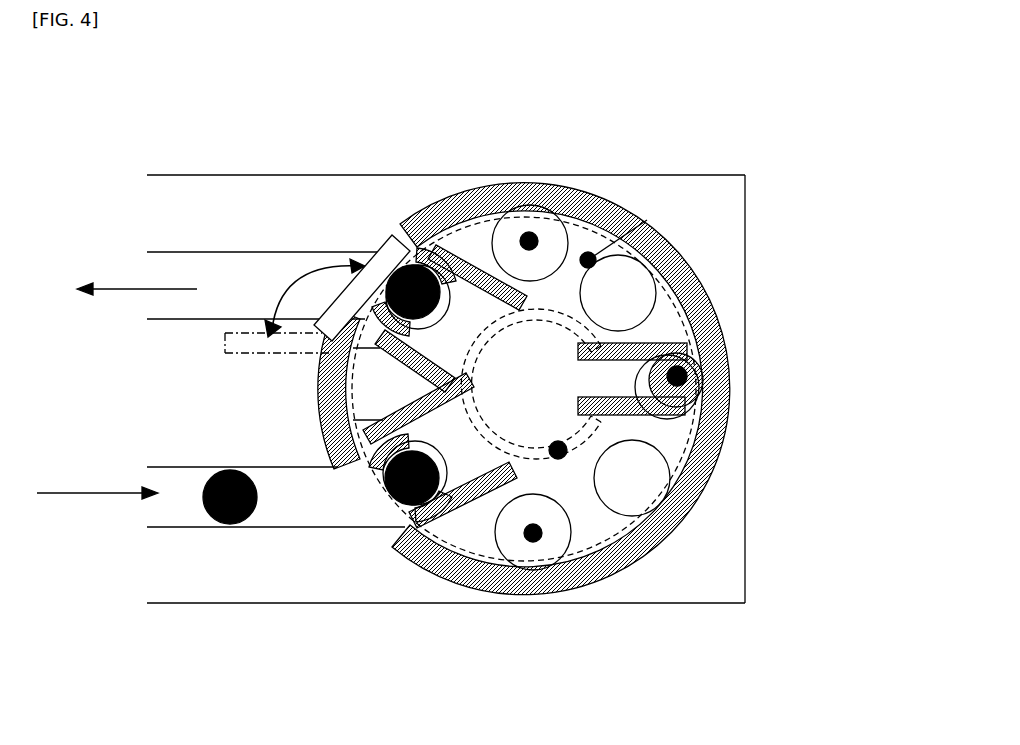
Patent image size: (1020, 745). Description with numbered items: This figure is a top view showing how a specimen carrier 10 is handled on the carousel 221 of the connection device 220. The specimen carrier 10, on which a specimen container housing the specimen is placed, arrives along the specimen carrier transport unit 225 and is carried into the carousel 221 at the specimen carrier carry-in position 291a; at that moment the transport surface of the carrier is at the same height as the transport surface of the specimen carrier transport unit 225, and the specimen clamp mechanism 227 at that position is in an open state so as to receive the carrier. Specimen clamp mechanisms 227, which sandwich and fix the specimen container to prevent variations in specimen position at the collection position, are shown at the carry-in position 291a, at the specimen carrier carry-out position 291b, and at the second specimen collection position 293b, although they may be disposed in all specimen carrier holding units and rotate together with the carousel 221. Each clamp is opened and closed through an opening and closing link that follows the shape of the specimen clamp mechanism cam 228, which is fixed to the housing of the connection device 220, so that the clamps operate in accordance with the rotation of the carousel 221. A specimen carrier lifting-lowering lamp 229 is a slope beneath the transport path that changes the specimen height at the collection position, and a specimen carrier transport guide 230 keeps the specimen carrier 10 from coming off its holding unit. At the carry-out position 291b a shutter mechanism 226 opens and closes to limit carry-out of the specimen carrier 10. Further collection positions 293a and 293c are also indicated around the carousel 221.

The specimen carrier 10 is at (224, 528).
The connection device 220 is at (168, 174).
The carousel 221 is at (747, 455).
The specimen carrier transport unit 225 is at (231, 253).
The shutter mechanism 226 is at (383, 243).
The specimen clamp mechanism 227 is at (478, 565).
The specimen clamp mechanism cam 228 is at (560, 452).
The specimen carrier lifting-lowering lamp 229 is at (553, 216).
The specimen carrier transport guide 230 is at (733, 343).
The specimen carrier carry-in position 291a is at (408, 508).
The specimen carrier carry-out position 291b is at (435, 258).
The lower guide pin 293a is at (533, 540).
The second specimen collection position 293b is at (713, 347).
The upper guide pin 293c is at (530, 240).